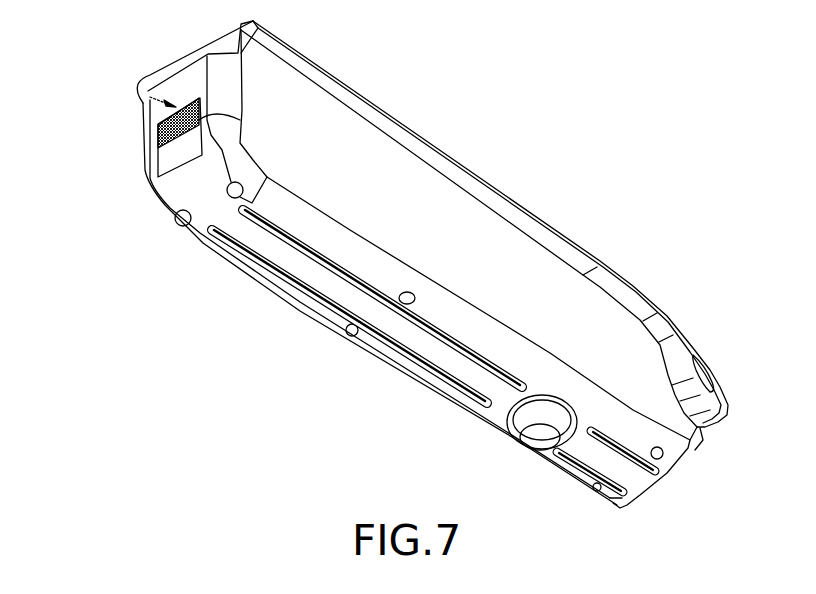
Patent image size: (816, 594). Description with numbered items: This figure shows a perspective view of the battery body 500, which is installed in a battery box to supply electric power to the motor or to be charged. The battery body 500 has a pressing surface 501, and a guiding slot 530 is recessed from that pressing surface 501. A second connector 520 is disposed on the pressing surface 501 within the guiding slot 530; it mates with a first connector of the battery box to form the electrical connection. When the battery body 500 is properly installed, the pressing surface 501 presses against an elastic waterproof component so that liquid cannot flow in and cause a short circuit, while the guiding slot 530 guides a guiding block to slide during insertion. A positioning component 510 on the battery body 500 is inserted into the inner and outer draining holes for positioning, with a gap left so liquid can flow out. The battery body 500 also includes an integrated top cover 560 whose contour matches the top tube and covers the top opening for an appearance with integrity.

The battery body 500 is at (143, 400).
The pressing surface 501 is at (148, 96).
The positioning component 510 is at (537, 440).
The second connector 520 is at (155, 132).
The guiding slot 530 is at (155, 167).
The top cover 560 is at (632, 281).